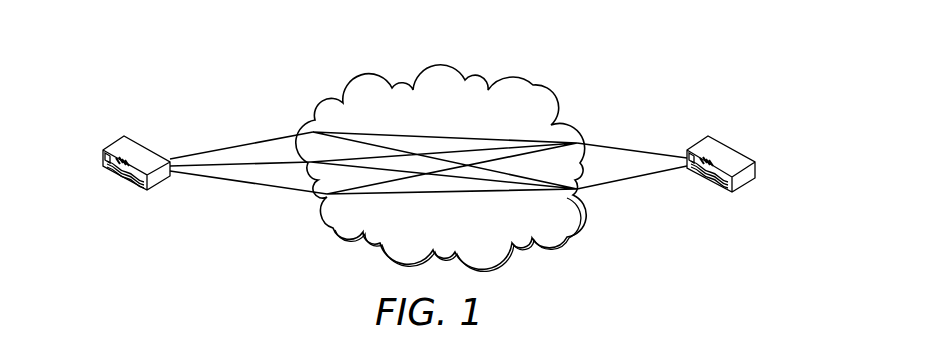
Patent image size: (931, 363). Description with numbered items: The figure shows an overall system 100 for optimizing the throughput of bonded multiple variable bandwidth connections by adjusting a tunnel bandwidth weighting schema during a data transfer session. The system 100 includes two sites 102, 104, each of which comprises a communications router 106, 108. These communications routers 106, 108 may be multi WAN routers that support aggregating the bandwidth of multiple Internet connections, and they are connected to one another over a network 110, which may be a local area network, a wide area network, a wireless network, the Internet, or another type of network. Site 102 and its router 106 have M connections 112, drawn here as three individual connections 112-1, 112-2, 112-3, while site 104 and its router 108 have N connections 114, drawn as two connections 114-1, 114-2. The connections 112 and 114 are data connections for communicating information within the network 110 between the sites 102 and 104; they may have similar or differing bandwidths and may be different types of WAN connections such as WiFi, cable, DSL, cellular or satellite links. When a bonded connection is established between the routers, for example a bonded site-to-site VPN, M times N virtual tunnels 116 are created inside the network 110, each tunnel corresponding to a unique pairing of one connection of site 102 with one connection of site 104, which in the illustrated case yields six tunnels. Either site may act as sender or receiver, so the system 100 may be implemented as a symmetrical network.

The system 100 is at (307, 63).
The site 102 is at (102, 148).
The site 104 is at (753, 155).
The communications router 106 is at (117, 175).
The communications router 108 is at (748, 176).
The network 110 is at (533, 85).
The connections 112 is at (236, 154).
The connection 112-1 is at (240, 145).
The connection 112-2 is at (245, 166).
The connection 112-3 is at (223, 185).
The connections 114 is at (649, 156).
The connection 114-1 is at (640, 150).
The connection 114-2 is at (625, 180).
The virtual tunnels 116 is at (438, 130).